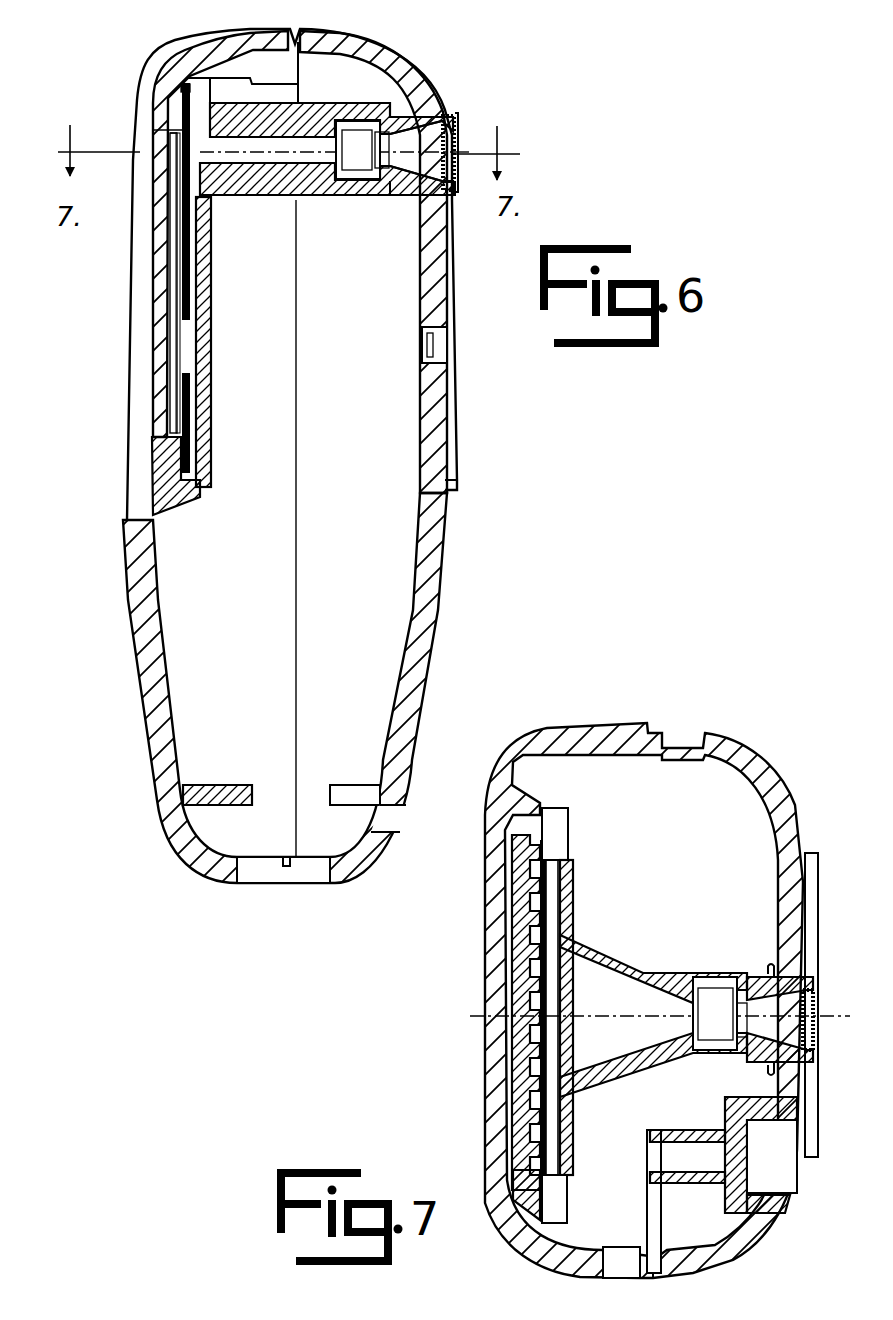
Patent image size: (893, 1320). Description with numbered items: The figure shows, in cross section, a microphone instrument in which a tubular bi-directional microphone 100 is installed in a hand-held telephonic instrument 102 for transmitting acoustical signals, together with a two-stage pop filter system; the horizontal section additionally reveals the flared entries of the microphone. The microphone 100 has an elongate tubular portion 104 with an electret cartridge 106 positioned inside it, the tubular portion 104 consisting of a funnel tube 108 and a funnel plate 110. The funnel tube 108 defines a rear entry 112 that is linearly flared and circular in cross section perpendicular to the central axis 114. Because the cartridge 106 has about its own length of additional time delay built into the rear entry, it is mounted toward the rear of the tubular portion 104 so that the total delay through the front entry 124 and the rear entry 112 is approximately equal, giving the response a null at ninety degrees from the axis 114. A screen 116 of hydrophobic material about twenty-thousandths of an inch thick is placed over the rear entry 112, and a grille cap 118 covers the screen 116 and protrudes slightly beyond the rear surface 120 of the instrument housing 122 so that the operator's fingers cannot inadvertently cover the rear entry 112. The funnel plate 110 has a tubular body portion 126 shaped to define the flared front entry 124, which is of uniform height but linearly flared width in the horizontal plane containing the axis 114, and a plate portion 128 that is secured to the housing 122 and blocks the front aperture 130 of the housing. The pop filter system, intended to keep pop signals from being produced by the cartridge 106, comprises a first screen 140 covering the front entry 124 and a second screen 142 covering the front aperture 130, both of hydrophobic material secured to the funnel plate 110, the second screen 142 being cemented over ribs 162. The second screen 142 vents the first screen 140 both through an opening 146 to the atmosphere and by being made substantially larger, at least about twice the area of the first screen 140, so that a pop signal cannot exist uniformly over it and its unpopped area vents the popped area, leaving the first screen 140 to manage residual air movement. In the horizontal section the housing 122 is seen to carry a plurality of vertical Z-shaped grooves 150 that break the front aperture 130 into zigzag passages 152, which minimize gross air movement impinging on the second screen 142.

In FIG. 6, the tubular bi-directional microphone 100 is at (331, 205).
In FIG. 6, the telephonic instrument 102 is at (90, 350).
In FIG. 6, the elongate tubular portion 104 is at (361, 205).
In FIG. 6, the electret cartridge 106 is at (353, 147).
In FIG. 7, the electret cartridge 106 is at (717, 990).
In FIG. 6, the funnel tube 108 is at (403, 195).
In FIG. 6, the funnel plate 110 is at (277, 200).
In FIG. 7, the funnel plate 110 is at (570, 917).
In FIG. 6, the rear entry 112 is at (457, 143).
In FIG. 7, the rear entry 112 is at (755, 980).
In FIG. 6, the central axis 114 is at (480, 148).
In FIG. 7, the central axis 114 is at (493, 1013).
In FIG. 6, the screen 116 is at (457, 187).
In FIG. 6, the grille cap 118 is at (448, 117).
In FIG. 7, the grille cap 118 is at (817, 1017).
In FIG. 6, the rear surface 120 is at (443, 113).
In FIG. 6, the instrument housing 122 is at (127, 524).
In FIG. 7, the instrument housing 122 is at (535, 786).
In FIG. 6, the front entry 124 is at (187, 130).
In FIG. 7, the front entry 124 is at (636, 1005).
In FIG. 6, the tubular body portion 126 is at (240, 105).
In FIG. 7, the tubular body portion 126 is at (618, 962).
In FIG. 6, the plate portion 128 is at (240, 313).
In FIG. 6, the front aperture 130 is at (150, 268).
In FIG. 7, the front aperture 130 is at (495, 954).
In FIG. 6, the first screen 140 is at (207, 152).
In FIG. 7, the first screen 140 is at (630, 983).
In FIG. 6, the second screen 142 is at (183, 218).
In FIG. 7, the second screen 142 is at (512, 1031).
In FIG. 6, the opening 146 is at (175, 345).
In FIG. 7, the vertical Z-shaped grooves 150 is at (510, 900).
In FIG. 7, the zigzag passages 152 is at (510, 943).
In FIG. 6, the ribs 162 is at (184, 88).